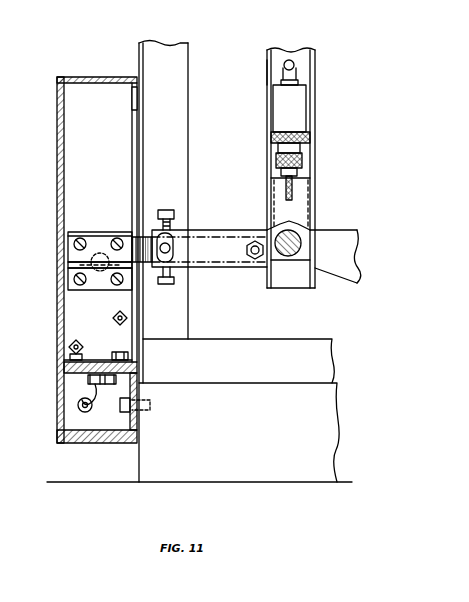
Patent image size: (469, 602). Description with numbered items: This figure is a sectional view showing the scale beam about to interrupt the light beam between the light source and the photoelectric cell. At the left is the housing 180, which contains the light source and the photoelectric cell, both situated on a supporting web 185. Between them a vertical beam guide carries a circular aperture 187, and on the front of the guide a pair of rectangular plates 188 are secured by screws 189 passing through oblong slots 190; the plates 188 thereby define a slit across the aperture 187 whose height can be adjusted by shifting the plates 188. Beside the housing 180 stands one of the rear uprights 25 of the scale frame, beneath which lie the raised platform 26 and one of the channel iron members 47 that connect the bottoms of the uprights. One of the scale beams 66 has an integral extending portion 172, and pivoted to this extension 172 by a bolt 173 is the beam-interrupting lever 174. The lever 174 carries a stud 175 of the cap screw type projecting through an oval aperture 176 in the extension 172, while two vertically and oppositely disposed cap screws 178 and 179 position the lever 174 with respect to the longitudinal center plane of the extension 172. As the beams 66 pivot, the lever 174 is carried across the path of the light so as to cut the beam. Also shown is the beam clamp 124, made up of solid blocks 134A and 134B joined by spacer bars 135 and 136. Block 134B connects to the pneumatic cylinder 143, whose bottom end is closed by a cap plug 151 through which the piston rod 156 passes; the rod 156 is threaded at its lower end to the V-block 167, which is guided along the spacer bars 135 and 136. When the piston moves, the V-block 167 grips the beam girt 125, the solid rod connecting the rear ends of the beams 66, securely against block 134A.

The rear uprights 25 is at (145, 58).
The raised platform 26 is at (310, 369).
The channel iron members 47 is at (302, 443).
The scale beams 66 is at (346, 245).
The beam clamp 124 is at (260, 75).
The beam girt 125 is at (288, 257).
The solid block 134A is at (300, 284).
The solid block 134B is at (300, 64).
The spacer bar 135 is at (271, 128).
The spacer bar 136 is at (316, 119).
The pneumatic cylinder 143 is at (279, 114).
The cap plug 151 is at (278, 163).
The rod 156 is at (283, 188).
The V-block 167 is at (303, 198).
The extending portion 172 is at (214, 270).
The bolt 173 is at (255, 262).
The beam-interrupting lever 174 is at (143, 238).
The stud 175 is at (172, 249).
The oval aperture 176 is at (176, 239).
The cap screw 178 is at (168, 212).
The cap screw 179 is at (167, 285).
The housing 180 is at (118, 77).
The supporting web 185 is at (66, 368).
The circular aperture 187 is at (100, 253).
The rectangular plates 188 is at (68, 250).
The screws 189 is at (80, 238).
The oblong slots 190 is at (70, 270).